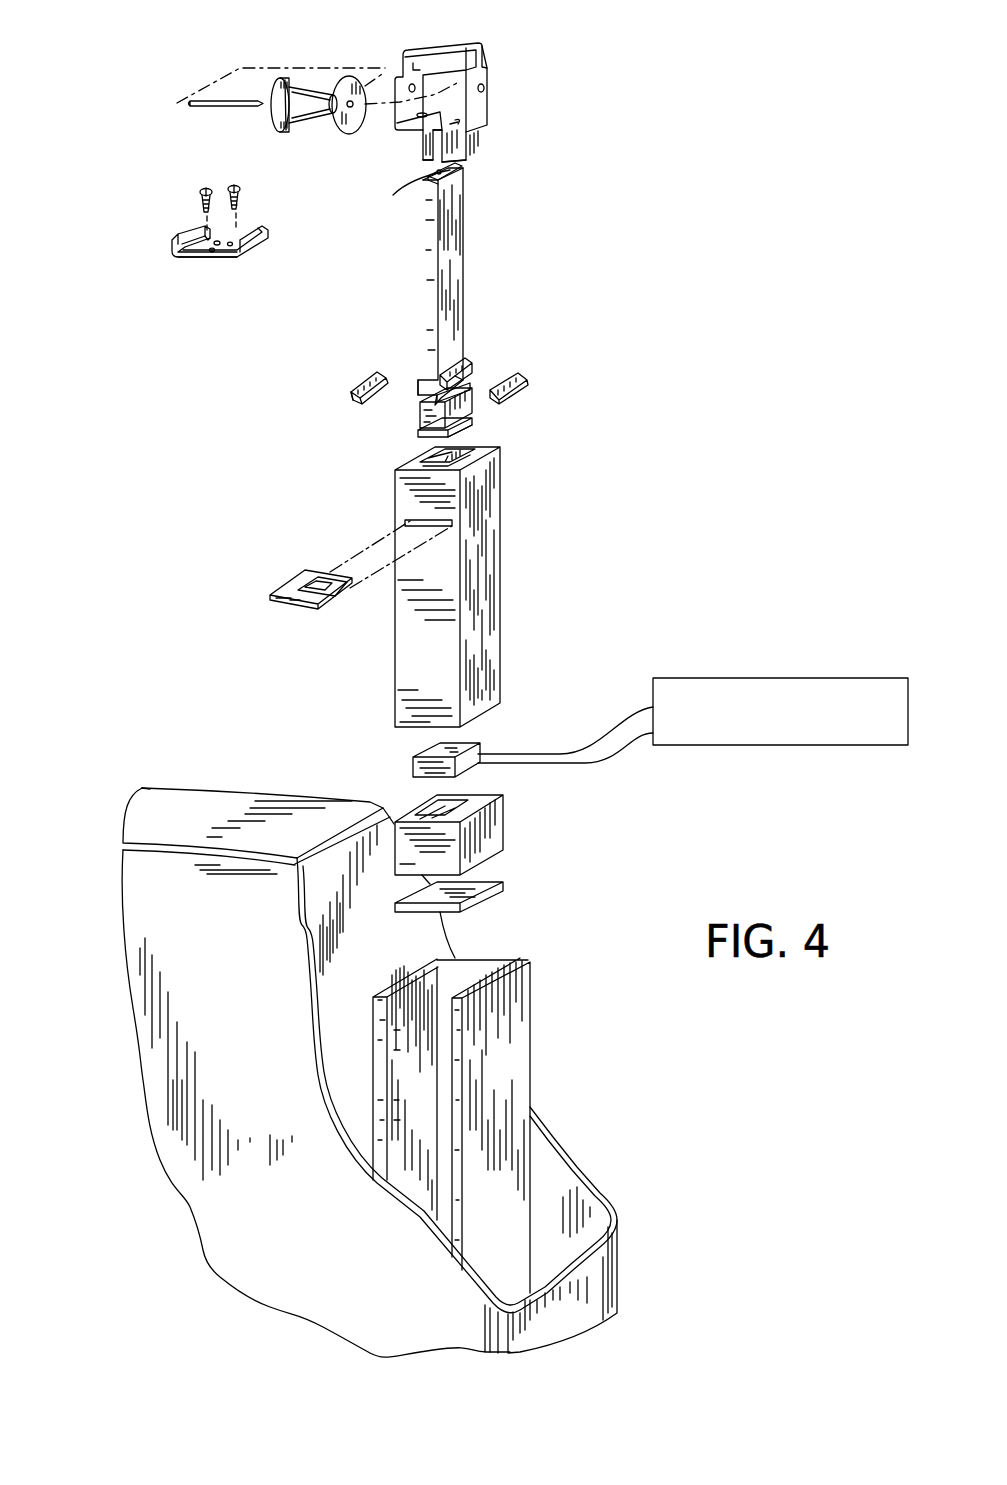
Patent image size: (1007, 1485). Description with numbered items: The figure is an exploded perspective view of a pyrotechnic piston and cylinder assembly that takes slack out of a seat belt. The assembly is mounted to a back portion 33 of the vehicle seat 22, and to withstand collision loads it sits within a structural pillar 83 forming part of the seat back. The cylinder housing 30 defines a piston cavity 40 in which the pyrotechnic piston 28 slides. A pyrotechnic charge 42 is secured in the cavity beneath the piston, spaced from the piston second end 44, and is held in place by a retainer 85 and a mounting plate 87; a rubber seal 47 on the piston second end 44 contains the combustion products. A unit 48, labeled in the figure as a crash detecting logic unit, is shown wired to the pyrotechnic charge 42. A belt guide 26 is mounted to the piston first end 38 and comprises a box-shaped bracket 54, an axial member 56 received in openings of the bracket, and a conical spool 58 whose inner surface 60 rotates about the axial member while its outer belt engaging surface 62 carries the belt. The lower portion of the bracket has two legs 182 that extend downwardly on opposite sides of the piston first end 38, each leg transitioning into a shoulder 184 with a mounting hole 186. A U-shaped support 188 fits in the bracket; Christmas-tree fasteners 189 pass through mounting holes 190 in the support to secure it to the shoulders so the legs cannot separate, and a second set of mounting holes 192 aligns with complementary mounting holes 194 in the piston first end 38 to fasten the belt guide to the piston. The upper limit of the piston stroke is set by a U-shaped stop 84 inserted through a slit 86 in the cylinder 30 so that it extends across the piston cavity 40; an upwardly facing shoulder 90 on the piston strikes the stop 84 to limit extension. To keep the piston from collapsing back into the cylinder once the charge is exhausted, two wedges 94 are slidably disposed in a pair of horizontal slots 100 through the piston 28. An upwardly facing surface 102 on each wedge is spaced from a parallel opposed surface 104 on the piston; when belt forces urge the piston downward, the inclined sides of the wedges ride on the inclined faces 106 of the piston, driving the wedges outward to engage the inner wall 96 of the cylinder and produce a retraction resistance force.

The vehicle seat 22 is at (246, 782).
The belt guide 26 is at (477, 42).
The pyrotechnic piston 28 is at (467, 237).
The cylinder housing 30 is at (500, 558).
The back portion of the vehicle seat 33 is at (172, 782).
The piston first end 38 is at (464, 171).
The piston cavity 40 is at (470, 443).
The pyrotechnic charge 42 is at (413, 763).
The piston second end 44 is at (418, 421).
The rubber seal 47 is at (474, 431).
The crash detecting logic unit 48 is at (785, 677).
The box-shaped bracket 54 is at (483, 53).
The axial member 56 is at (219, 107).
The conical spool 58 is at (277, 121).
The inner surface 60 is at (354, 110).
The outer belt engaging surface 62 is at (308, 92).
The structural pillar 83 is at (530, 1012).
The U-shaped stop 84 is at (270, 600).
The retainer 85 is at (505, 837).
The slit 86 is at (408, 522).
The mounting plate 87 is at (503, 883).
The upwardly facing shoulder 90 is at (457, 348).
The wedges 94 is at (350, 382).
The inner wall of the cylinder 96 is at (423, 453).
The horizontal slots 100 is at (467, 360).
The upwardly facing surface 102 is at (375, 377).
The opposed surface 104 is at (420, 388).
The inclined faces 106 is at (440, 398).
The legs 182 is at (468, 154).
The shoulder 184 is at (392, 146).
The mounting hole 186 is at (468, 128).
The U-shaped support 188 is at (172, 248).
The fasteners 189 is at (230, 185).
The mounting holes 190 is at (205, 255).
The second set of mounting holes 192 is at (213, 256).
The complementary mounting holes 194 is at (457, 165).